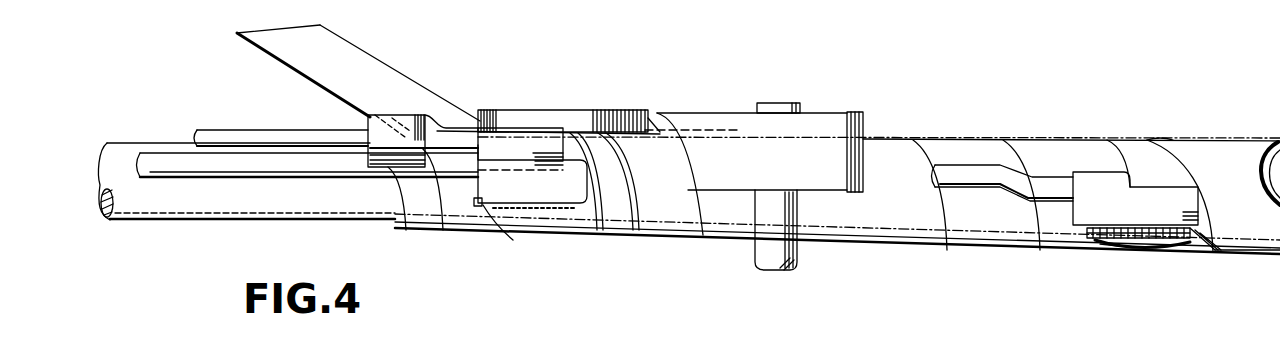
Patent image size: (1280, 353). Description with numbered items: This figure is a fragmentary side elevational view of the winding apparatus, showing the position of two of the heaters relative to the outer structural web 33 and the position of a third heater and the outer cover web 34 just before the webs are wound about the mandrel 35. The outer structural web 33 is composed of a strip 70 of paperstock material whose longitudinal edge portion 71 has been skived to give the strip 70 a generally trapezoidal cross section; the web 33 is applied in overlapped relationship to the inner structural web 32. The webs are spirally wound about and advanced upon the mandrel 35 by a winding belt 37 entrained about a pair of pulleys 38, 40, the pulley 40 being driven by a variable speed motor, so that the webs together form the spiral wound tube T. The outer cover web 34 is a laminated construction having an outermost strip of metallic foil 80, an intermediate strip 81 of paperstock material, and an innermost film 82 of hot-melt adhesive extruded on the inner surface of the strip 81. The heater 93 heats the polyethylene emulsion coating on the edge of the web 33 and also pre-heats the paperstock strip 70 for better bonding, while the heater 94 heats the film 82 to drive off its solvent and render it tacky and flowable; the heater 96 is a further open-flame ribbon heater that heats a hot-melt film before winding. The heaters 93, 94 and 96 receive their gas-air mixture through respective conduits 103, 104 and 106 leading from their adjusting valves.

The mandrel 35 is at (246, 181).
The conduit 103 is at (308, 165).
The conduit 106 is at (256, 131).
The inner structural web 32 is at (390, 88).
The heater 96 is at (367, 117).
The heater 93 is at (489, 163).
The strip of paperstock material 70 is at (484, 214).
The longitudinal edge portion 71 is at (486, 210).
The pulley 40 is at (593, 127).
The outer structural web 33 is at (566, 240).
The winding belt 37 is at (752, 191).
The pulley 38 is at (830, 113).
The conduit 104 is at (1003, 183).
The heater 94 is at (1135, 198).
The film of hot-melt adhesive 82 is at (1143, 226).
The ring 80 is at (1110, 248).
The intermediate strip of paperstock material 81 is at (1143, 247).
The outer cover web 34 is at (1222, 150).
The spiral wound tube T is at (1243, 257).